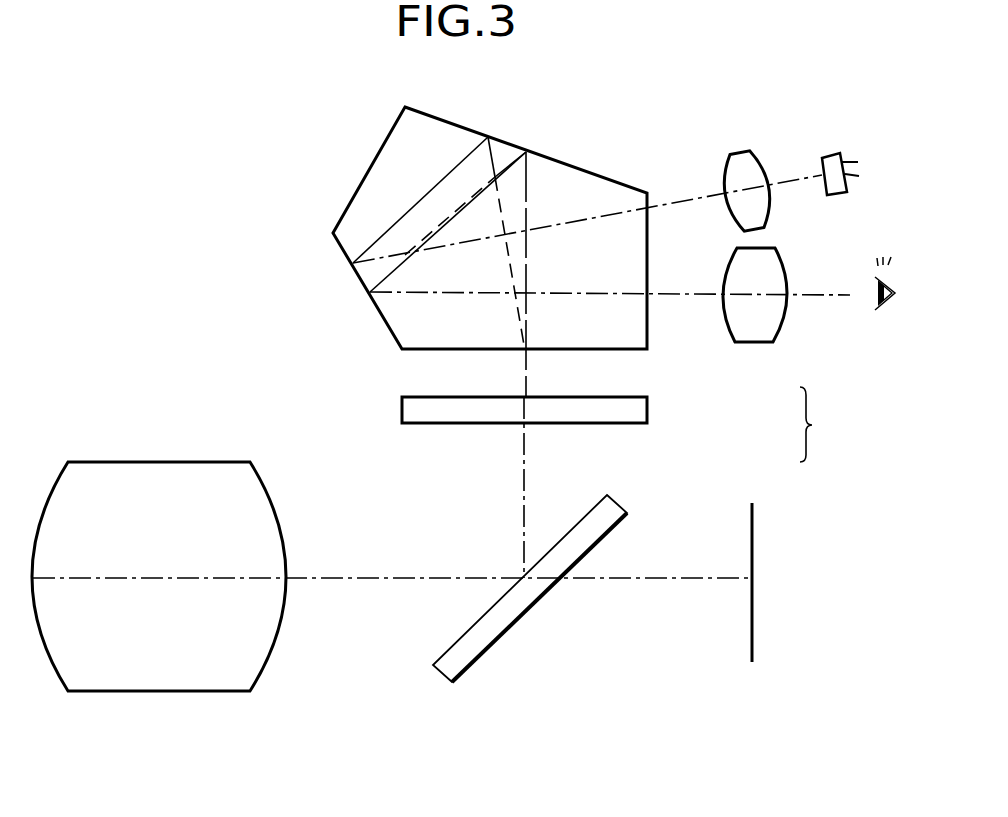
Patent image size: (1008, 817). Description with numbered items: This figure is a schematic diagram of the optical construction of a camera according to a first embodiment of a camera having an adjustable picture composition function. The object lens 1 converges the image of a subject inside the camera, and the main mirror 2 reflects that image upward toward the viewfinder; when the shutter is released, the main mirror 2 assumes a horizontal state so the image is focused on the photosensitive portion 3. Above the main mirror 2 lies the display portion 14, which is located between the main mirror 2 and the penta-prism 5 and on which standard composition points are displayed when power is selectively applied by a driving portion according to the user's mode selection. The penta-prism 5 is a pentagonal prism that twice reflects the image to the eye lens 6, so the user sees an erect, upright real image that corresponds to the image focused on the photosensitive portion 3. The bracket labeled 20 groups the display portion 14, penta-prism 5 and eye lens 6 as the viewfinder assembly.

The object lens 1 is at (103, 683).
The main mirror 2 is at (467, 662).
The photosensitive portion 3 is at (753, 650).
The penta-prism 5 is at (652, 343).
The eye lens 6 is at (753, 340).
The display portion 14 is at (650, 412).
The finder optical system 20 is at (825, 424).